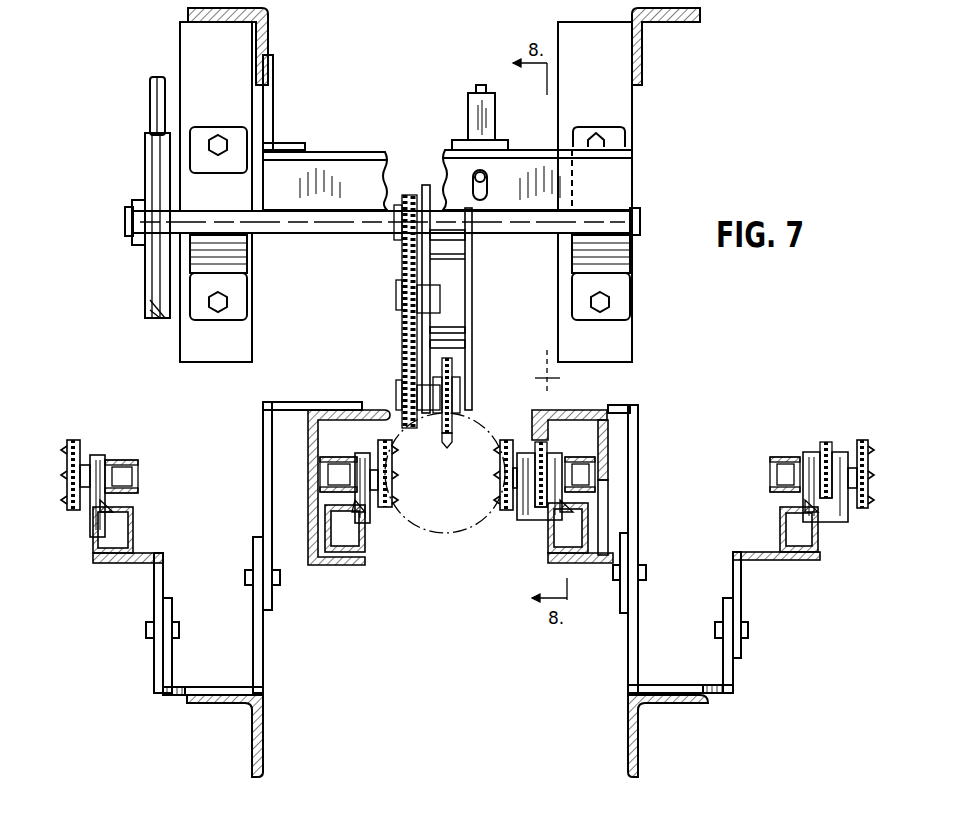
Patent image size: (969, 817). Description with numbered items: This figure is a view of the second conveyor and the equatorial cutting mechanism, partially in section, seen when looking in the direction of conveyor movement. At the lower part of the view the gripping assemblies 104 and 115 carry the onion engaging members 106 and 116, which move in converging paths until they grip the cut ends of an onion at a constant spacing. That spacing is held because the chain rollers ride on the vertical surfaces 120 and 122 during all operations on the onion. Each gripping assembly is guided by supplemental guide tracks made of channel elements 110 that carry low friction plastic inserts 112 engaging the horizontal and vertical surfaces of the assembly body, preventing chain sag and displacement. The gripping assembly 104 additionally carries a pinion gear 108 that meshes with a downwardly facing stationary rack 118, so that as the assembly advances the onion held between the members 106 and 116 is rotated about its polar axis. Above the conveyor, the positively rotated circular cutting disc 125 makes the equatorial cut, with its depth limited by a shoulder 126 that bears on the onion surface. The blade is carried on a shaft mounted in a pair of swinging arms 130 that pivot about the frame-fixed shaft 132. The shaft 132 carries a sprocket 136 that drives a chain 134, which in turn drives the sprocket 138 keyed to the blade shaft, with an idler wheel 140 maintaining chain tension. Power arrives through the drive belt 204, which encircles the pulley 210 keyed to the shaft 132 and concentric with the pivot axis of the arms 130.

The gripping assembly 104 is at (536, 522).
The onion engaging member 106 is at (505, 462).
The pinion gear 108 is at (546, 456).
The channel element 110 is at (133, 548).
The low friction plastic insert 112 is at (110, 523).
The gripping assembly 115 is at (107, 452).
The onion engaging member 116 is at (67, 460).
The stationary rack 118 is at (538, 430).
The vertical surface 120 is at (600, 450).
The vertical surface 122 is at (320, 441).
The circular cutting disc 125 is at (446, 356).
The shoulder 126 is at (444, 447).
The swinging arms 130 is at (430, 263).
The shaft 132 is at (512, 233).
The chain 134 is at (402, 265).
The sprocket 136 is at (397, 236).
The sprocket 138 is at (400, 398).
The idler wheel 140 is at (400, 296).
The drive belt 204 is at (158, 99).
The pulley 210 is at (156, 176).